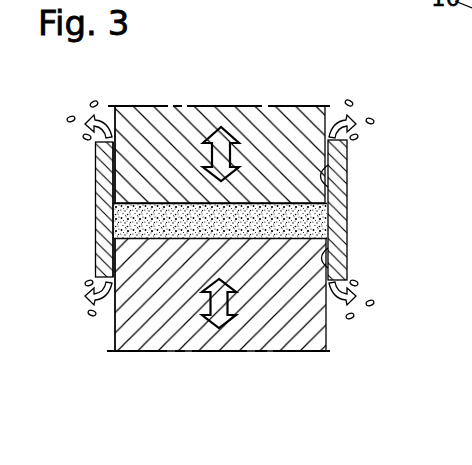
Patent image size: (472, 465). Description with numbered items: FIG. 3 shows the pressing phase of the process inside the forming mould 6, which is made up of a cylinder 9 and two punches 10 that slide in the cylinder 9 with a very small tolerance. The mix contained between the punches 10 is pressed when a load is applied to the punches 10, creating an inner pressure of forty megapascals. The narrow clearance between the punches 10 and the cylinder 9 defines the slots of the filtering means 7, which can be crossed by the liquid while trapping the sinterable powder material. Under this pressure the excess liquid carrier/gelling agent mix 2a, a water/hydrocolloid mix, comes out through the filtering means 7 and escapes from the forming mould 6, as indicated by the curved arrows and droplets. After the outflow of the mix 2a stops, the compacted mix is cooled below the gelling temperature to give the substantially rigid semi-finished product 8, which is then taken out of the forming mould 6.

The punches 10 is at (273, 127).
The semi-finished product 8 is at (326, 221).
The cylinder 9 is at (95, 170).
The filtering means 7 is at (328, 164).
The forming mould 6 is at (96, 225).
The liquid carrier/gelling agent mix 2a is at (372, 308).